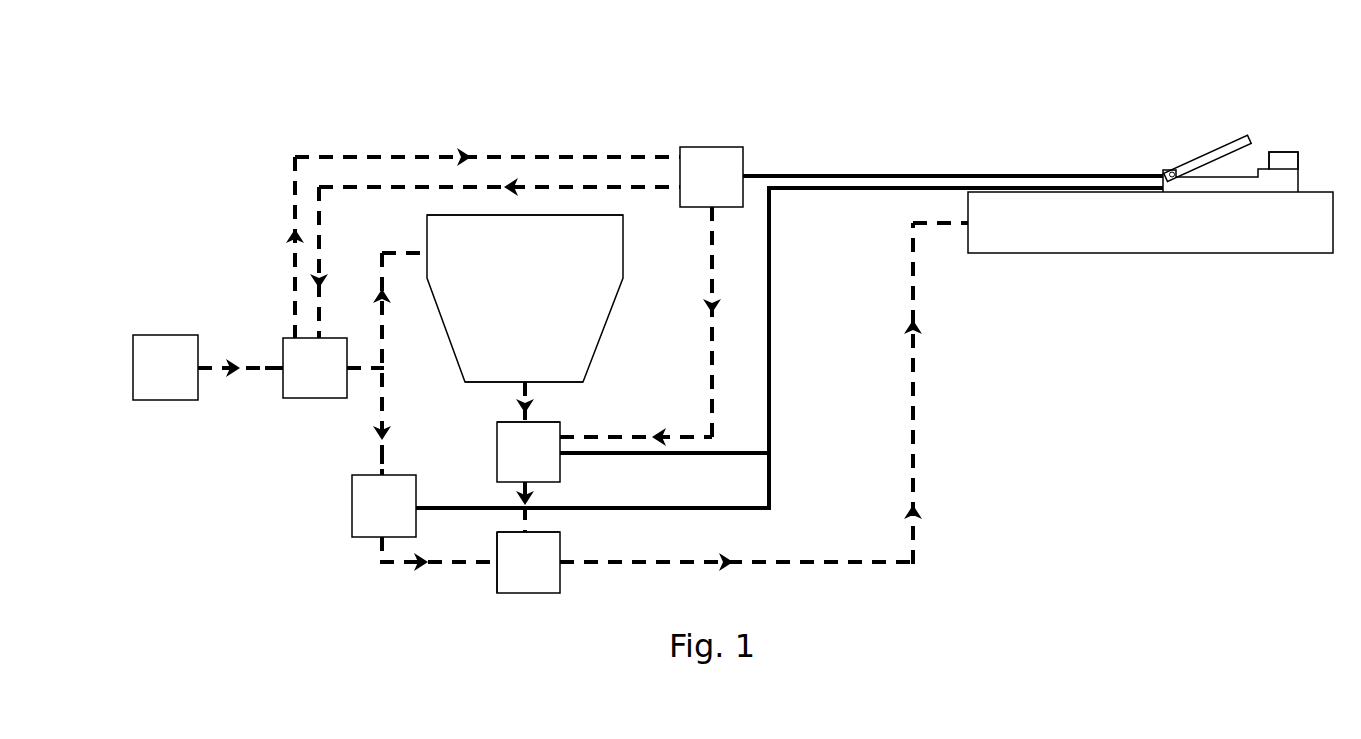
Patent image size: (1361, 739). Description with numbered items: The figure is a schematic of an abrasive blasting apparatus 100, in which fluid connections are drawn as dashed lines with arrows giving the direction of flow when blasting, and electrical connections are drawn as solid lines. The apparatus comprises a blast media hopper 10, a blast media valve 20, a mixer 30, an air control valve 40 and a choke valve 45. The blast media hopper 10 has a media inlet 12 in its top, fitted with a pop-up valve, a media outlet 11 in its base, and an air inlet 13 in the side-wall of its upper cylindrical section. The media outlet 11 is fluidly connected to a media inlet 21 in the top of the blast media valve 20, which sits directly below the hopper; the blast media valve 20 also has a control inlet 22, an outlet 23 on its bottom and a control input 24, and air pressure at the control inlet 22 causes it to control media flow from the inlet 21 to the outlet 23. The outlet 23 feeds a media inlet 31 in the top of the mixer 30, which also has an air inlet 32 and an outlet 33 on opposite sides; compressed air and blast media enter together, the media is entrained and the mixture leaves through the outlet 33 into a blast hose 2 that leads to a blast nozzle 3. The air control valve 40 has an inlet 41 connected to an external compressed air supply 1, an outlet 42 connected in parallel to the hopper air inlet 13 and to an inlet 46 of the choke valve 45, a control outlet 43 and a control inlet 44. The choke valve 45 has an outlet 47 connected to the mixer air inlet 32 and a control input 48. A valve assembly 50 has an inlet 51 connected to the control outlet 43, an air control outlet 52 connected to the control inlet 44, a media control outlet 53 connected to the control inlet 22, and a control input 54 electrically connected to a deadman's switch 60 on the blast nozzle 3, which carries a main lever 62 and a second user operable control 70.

The abrasive blasting apparatus 100 is at (1086, 530).
The external compressed air supply 1 is at (208, 367).
The blast hose 2 is at (918, 421).
The blast nozzle 3 is at (1086, 255).
The blast media hopper 10 is at (525, 298).
The media outlet 11 is at (505, 385).
The media inlet 12 is at (525, 216).
The air inlet 13 is at (420, 248).
The blast media valve 20 is at (528, 452).
The media inlet 21 is at (562, 422).
The control inlet 22 is at (565, 436).
The outlet 23 is at (517, 481).
The control input 24 is at (563, 460).
The mixer 30 is at (528, 562).
The media inlet 31 is at (540, 531).
The air inlet 32 is at (497, 571).
The outlet 33 is at (560, 571).
The air control valve 40 is at (315, 368).
The inlet 41 is at (285, 371).
The outlet 42 is at (336, 375).
The control outlet 43 is at (291, 336).
The control inlet 44 is at (328, 334).
The choke valve 45 is at (384, 506).
The inlet 46 is at (380, 476).
The outlet 47 is at (380, 538).
The control input 48 is at (416, 501).
The valve assembly 50 is at (711, 177).
The inlet 51 is at (678, 148).
The air control outlet 52 is at (680, 198).
The media control outlet 53 is at (716, 210).
The control input 54 is at (745, 170).
The deadman's switch 60 is at (1171, 133).
The main lever 62 is at (1195, 155).
The second user operable control 70 is at (1286, 150).